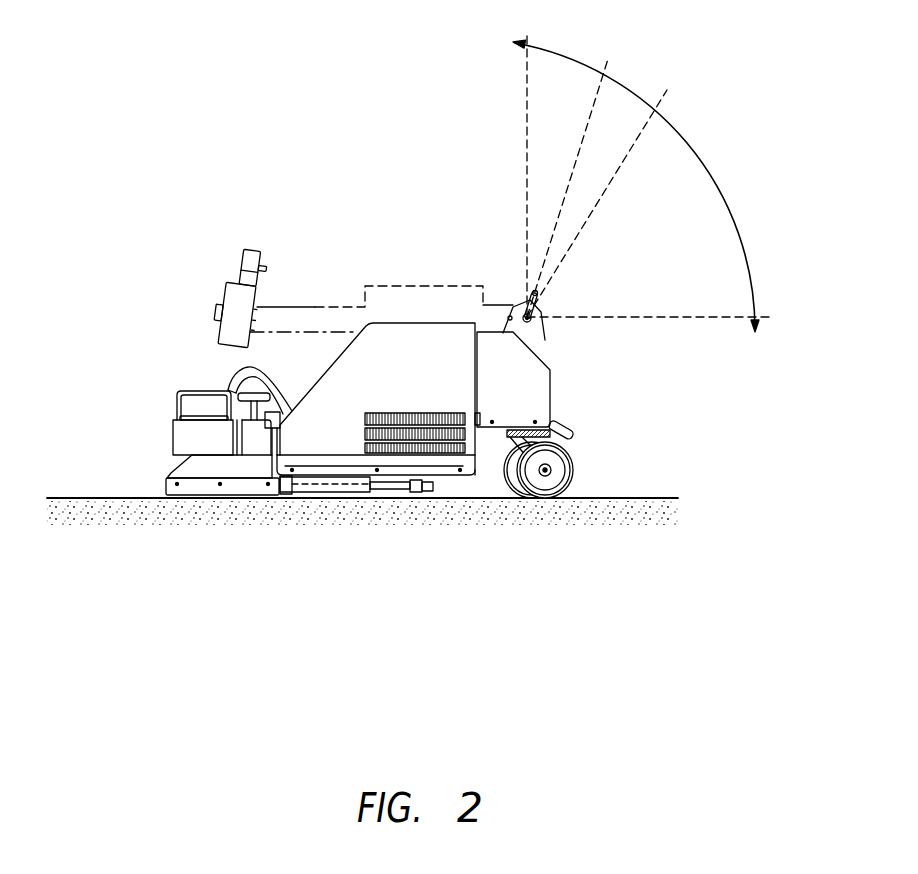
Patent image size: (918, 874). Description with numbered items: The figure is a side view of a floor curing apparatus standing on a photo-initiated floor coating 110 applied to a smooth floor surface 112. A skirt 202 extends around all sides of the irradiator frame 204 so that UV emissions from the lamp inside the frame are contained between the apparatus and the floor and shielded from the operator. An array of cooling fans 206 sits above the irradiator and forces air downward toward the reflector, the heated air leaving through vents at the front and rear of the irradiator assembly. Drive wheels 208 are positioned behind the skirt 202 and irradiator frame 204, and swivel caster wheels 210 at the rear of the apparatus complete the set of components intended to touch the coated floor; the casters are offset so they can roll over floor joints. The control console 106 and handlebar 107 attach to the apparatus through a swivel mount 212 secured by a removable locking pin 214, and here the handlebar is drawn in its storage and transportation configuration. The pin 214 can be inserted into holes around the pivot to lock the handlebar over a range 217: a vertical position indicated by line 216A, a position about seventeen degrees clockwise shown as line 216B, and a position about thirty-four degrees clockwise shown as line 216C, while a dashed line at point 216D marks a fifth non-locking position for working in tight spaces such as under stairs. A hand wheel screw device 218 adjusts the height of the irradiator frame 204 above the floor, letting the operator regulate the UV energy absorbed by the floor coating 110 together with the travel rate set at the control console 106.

The control console assembly 106 is at (258, 297).
The handlebar 107 is at (315, 308).
The floor coating 110 is at (640, 498).
The floor surface 112 is at (627, 525).
The skirt 202 is at (165, 486).
The irradiator frame 204 is at (167, 477).
The array of cooling fans 206 is at (207, 418).
The drive wheels 208 is at (313, 500).
The swivel caster wheels 210 is at (543, 498).
The swivel mount 212 is at (522, 295).
The removable locking pin 214 is at (538, 318).
The line 216A is at (527, 128).
The line 216B is at (600, 85).
The line 216C is at (638, 137).
The point 216D is at (615, 317).
The range 217 is at (718, 177).
The hand wheel screw device 218 is at (250, 393).